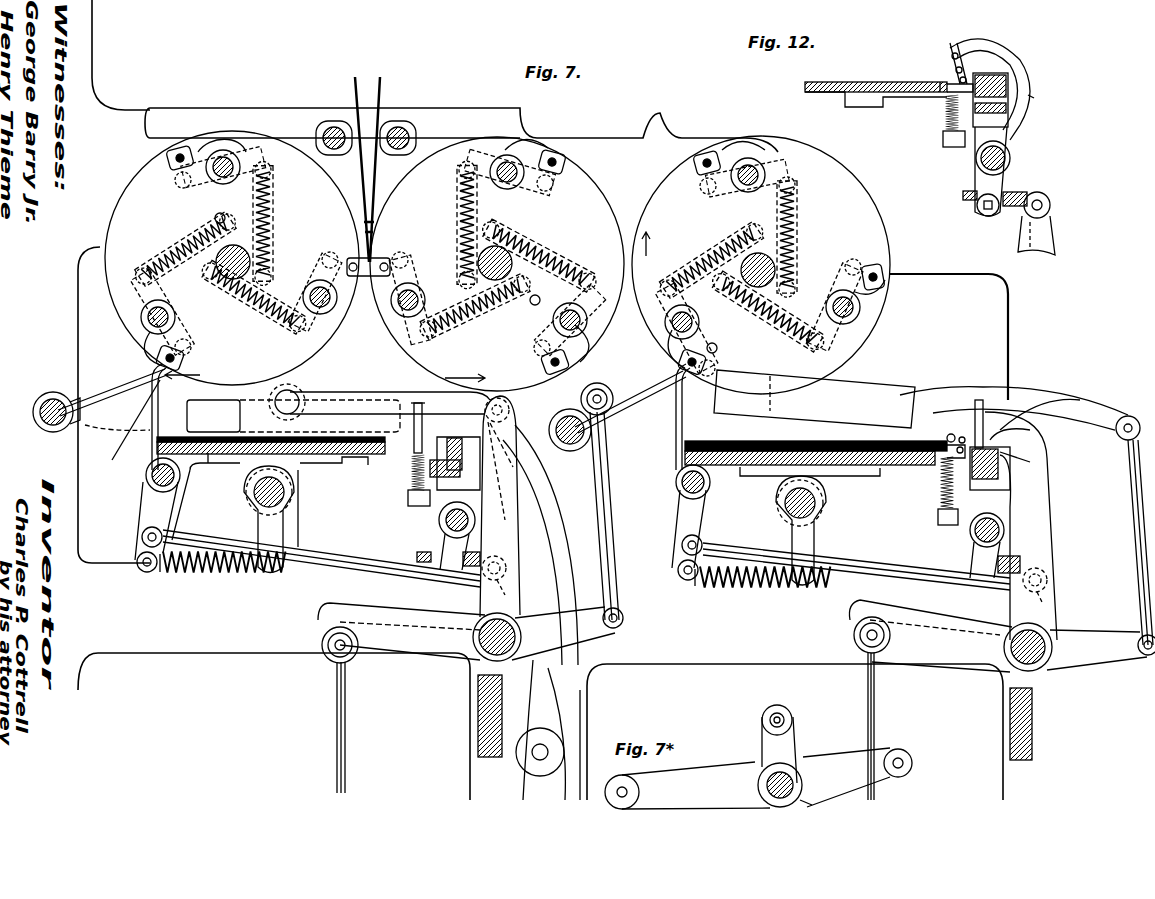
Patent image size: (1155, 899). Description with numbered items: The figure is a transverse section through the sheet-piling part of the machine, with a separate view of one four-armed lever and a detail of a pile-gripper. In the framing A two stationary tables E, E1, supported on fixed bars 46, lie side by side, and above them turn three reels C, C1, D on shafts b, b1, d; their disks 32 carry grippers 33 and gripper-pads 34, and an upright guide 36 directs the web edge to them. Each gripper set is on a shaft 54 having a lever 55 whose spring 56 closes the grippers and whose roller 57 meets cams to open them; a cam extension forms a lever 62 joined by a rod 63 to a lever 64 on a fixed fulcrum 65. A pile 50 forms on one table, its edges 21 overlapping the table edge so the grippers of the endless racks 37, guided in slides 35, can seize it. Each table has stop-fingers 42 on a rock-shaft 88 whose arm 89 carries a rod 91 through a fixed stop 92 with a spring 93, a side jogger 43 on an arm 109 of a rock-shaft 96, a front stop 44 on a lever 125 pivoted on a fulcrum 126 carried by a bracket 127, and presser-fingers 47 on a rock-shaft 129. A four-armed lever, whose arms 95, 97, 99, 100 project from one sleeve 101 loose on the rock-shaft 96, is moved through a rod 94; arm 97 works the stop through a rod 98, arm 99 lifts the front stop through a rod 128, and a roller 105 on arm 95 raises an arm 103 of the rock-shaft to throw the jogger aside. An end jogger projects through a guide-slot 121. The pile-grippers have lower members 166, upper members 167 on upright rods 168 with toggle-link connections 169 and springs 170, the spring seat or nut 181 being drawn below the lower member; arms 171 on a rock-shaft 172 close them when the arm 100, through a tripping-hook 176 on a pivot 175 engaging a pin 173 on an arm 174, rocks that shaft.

In FIG. 7, the edges of the piles 21 is at (431, 417).
In FIG. 7, the disks 32 is at (497, 262).
In FIG. 7, the grippers 33 is at (218, 148).
In FIG. 7, the gripper-pads 34 is at (168, 158).
In FIG. 7, the slides 35 is at (440, 505).
In FIG. 12, the slides 35 is at (1011, 92).
In FIG. 7, the upright guide 36 is at (366, 168).
In FIG. 7, the endless racks 37 is at (472, 462).
In FIG. 12, the endless racks 37 is at (1005, 82).
In FIG. 7, the stop-fingers 42 is at (387, 428).
In FIG. 7, the side jogger 43 is at (414, 440).
In FIG. 7, the front stop 44 is at (551, 401).
In FIG. 7, the table-supporting bars 46 is at (285, 503).
In FIG. 7, the presser-fingers 47 is at (372, 401).
In FIG. 7, the pile 50 is at (745, 447).
In FIG. 7, the gripper-shafts 54 is at (222, 178).
In FIG. 7, the lever 55 is at (215, 196).
In FIG. 7, the spring 56 is at (479, 257).
In FIG. 7, the roller 57 is at (176, 184).
In FIG. 7, the lever 62 is at (302, 398).
In FIG. 7, the rod 63 is at (340, 398).
In FIG. 7, the lever 64 is at (540, 545).
In FIG. 7, the fixed fulcrum 65 is at (537, 756).
In FIG. 7, the rock-shaft 88 is at (150, 479).
In FIG. 7, the arm 89 is at (138, 515).
In FIG. 7, the rod 91 is at (228, 576).
In FIG. 7, the fixed stop 92 is at (262, 532).
In FIG. 7, the spring 93 is at (190, 575).
In FIG. 7, the rod 94 is at (592, 726).
In FIG. 7, the arm 95 is at (393, 662).
The arm 95 is at (687, 785).
In FIG. 7, the rock-shaft 96 is at (492, 658).
The rock-shaft 96 is at (766, 788).
In FIG. 7, the arm 97 is at (510, 591).
The arm 97 is at (795, 741).
In FIG. 7, the rod 98 is at (332, 565).
In FIG. 7, the arm 99 is at (833, 638).
The arm 99 is at (857, 777).
In FIG. 7, the arm 100 is at (508, 566).
In FIG. 12, the arm 100 is at (1036, 252).
The arm 100 is at (776, 707).
The sleeve 101 is at (812, 798).
In FIG. 7, the arm 103 is at (665, 621).
In FIG. 7, the roller 105 is at (338, 662).
In FIG. 7, the arms 109 is at (775, 518).
In FIG. 7, the guide-slot 121 is at (499, 397).
In FIG. 7, the levers 125 is at (851, 409).
In FIG. 7, the fixed fulcrums 126 is at (1042, 410).
In FIG. 7, the brackets 127 is at (1006, 463).
In FIG. 7, the rods 128 is at (652, 528).
In FIG. 7, the rock-shaft 129 is at (53, 425).
In FIG. 7, the lower gripper members 166 is at (962, 462).
In FIG. 12, the lower gripper members 166 is at (940, 92).
In FIG. 7, the upper gripper members 167 is at (947, 441).
In FIG. 12, the upper gripper members 167 is at (954, 44).
In FIG. 12, the upright rods 168 is at (953, 73).
In FIG. 12, the toggle-link connections 169 is at (968, 78).
In FIG. 7, the springs 170 is at (412, 472).
In FIG. 12, the springs 170 is at (948, 122).
In FIG. 7, the arms 171 is at (1018, 497).
In FIG. 12, the arms 171 is at (1034, 100).
In FIG. 7, the rock-shaft 172 is at (443, 542).
In FIG. 12, the rock-shaft 172 is at (1012, 160).
In FIG. 12, the pin 173 is at (988, 217).
In FIG. 7, the arm 174 is at (993, 572).
In FIG. 12, the arm 174 is at (983, 186).
In FIG. 12, the pivot 175 is at (1042, 206).
In FIG. 7, the tripping-hook 176 is at (446, 574).
In FIG. 12, the tripping-hook 176 is at (970, 203).
In FIG. 7, the bolt 181 is at (410, 504).
In FIG. 12, the bolt 181 is at (950, 146).
In FIG. 7, the framing A is at (418, 642).
In FIG. 7, the rotary sheet-carrier C is at (154, 218).
In FIG. 7, the rotary sheet-carrier C1 is at (688, 230).
In FIG. 7, the rotary sheet-carrier D is at (492, 336).
In FIG. 7, the table E is at (270, 500).
In FIG. 7, the table E1 is at (859, 491).
In FIG. 12, the table E1 is at (889, 82).
In FIG. 7, the shaft b is at (233, 282).
In FIG. 7, the shaft b1 is at (782, 278).
In FIG. 7, the shaft d is at (505, 250).